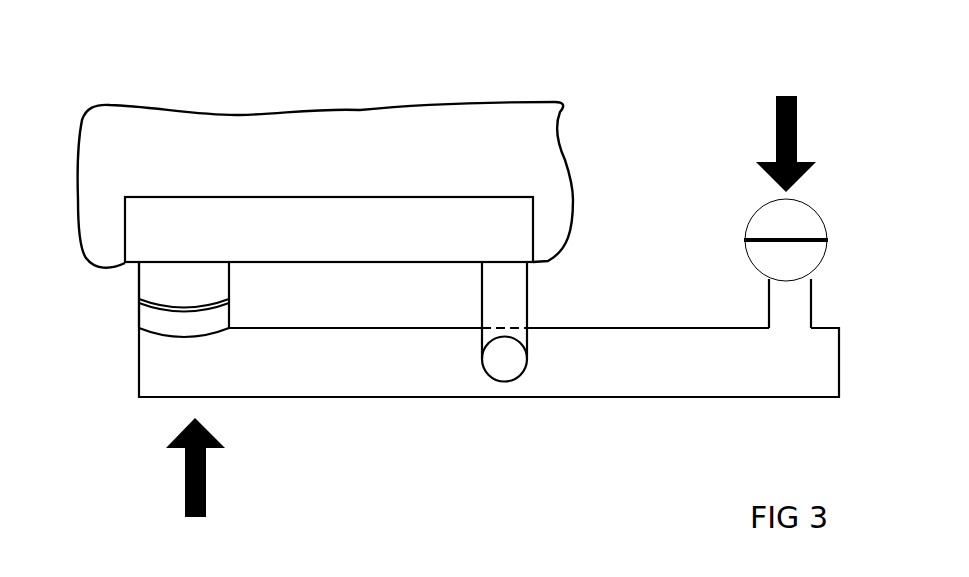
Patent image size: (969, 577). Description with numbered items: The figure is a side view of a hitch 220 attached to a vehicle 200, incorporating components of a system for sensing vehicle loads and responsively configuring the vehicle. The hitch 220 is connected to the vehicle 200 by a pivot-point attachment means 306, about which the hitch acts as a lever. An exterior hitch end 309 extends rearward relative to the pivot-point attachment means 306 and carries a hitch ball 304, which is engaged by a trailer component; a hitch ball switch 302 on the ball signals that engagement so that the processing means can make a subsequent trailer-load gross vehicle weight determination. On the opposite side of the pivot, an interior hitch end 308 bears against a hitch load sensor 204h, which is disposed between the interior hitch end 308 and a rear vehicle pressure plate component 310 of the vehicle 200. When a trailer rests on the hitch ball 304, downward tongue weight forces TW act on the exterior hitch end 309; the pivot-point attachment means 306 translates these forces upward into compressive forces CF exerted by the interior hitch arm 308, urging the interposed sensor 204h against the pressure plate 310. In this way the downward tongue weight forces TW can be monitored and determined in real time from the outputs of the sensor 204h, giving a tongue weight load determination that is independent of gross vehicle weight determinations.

The vehicle 200 is at (570, 167).
The rear vehicle pressure plate component 310 is at (325, 262).
The hitch 220 is at (553, 417).
The interior hitch end 308 is at (168, 358).
The hitch load sensor 204h is at (229, 302).
The pivot-point attachment means 306 is at (540, 309).
The exterior hitch end 309 is at (737, 372).
The hitch ball 304 is at (753, 265).
The hitch ball switch 302 is at (745, 240).
The tongue weight forces TW is at (775, 160).
The compressive forces CF is at (208, 485).